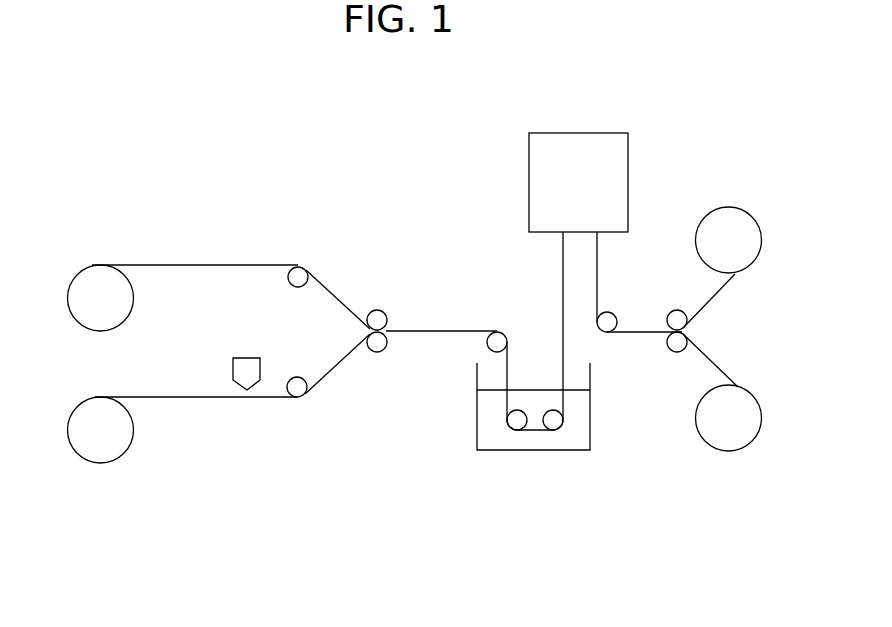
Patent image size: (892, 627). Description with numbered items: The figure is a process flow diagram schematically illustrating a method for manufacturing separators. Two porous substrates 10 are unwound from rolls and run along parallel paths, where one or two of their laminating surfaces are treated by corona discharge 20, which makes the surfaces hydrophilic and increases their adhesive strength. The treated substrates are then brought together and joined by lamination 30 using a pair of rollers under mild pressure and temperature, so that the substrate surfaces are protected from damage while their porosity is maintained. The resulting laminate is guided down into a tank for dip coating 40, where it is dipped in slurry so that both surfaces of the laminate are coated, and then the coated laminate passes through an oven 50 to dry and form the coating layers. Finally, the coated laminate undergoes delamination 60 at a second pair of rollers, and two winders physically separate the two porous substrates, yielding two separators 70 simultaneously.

The porous substrates 10 is at (97, 282).
The corona discharge 20 is at (222, 370).
The lamination 30 is at (390, 310).
The dip coating 40 is at (490, 427).
The oven 50 is at (560, 186).
The delamination 60 is at (663, 323).
The separators 70 is at (717, 225).